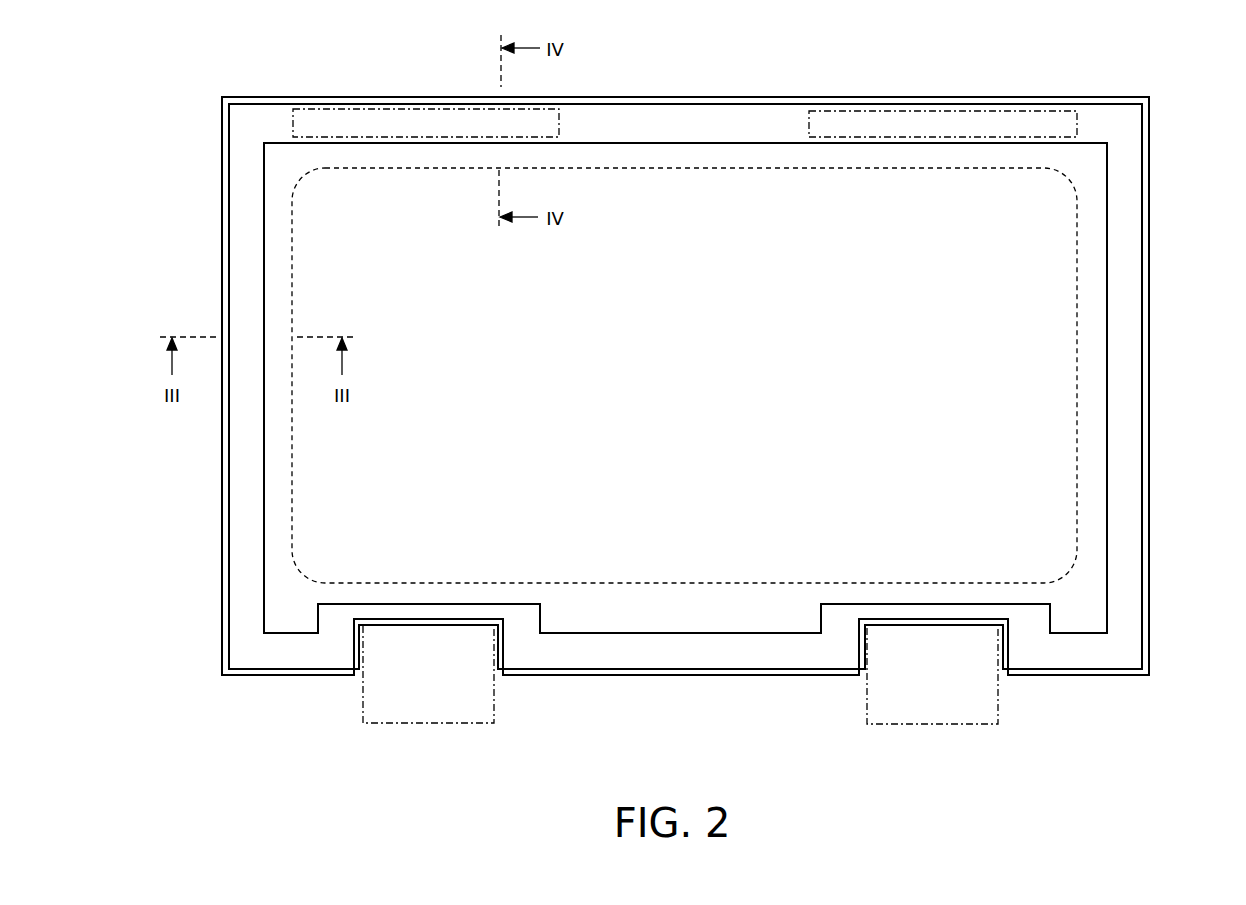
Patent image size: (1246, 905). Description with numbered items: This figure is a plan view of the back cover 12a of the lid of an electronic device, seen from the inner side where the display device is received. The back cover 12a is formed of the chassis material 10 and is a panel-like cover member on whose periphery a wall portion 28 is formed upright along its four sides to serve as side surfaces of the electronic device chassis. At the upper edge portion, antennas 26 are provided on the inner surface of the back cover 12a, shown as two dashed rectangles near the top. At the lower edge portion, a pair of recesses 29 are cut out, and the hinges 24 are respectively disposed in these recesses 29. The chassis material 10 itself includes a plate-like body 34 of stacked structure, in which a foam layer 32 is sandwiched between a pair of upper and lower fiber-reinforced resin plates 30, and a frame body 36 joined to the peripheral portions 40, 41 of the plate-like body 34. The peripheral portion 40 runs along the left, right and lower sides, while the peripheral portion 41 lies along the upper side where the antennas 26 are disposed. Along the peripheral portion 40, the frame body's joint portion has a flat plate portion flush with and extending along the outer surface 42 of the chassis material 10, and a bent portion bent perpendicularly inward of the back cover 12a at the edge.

The back cover 12a is at (186, 78).
The chassis material 10 is at (685, 386).
The hinge 24 is at (410, 723).
The antenna 26 is at (417, 103).
The wall portion 28 is at (688, 104).
The recess 29 is at (362, 655).
The fiber-reinforced resin plate 30 is at (1097, 197).
The foam layer 32 is at (1077, 272).
The plate-like body 34 is at (1033, 343).
The frame body 36 is at (1121, 432).
The peripheral portion 40 is at (1117, 483).
The peripheral portion 41 is at (775, 133).
The outer surface 42 is at (283, 593).